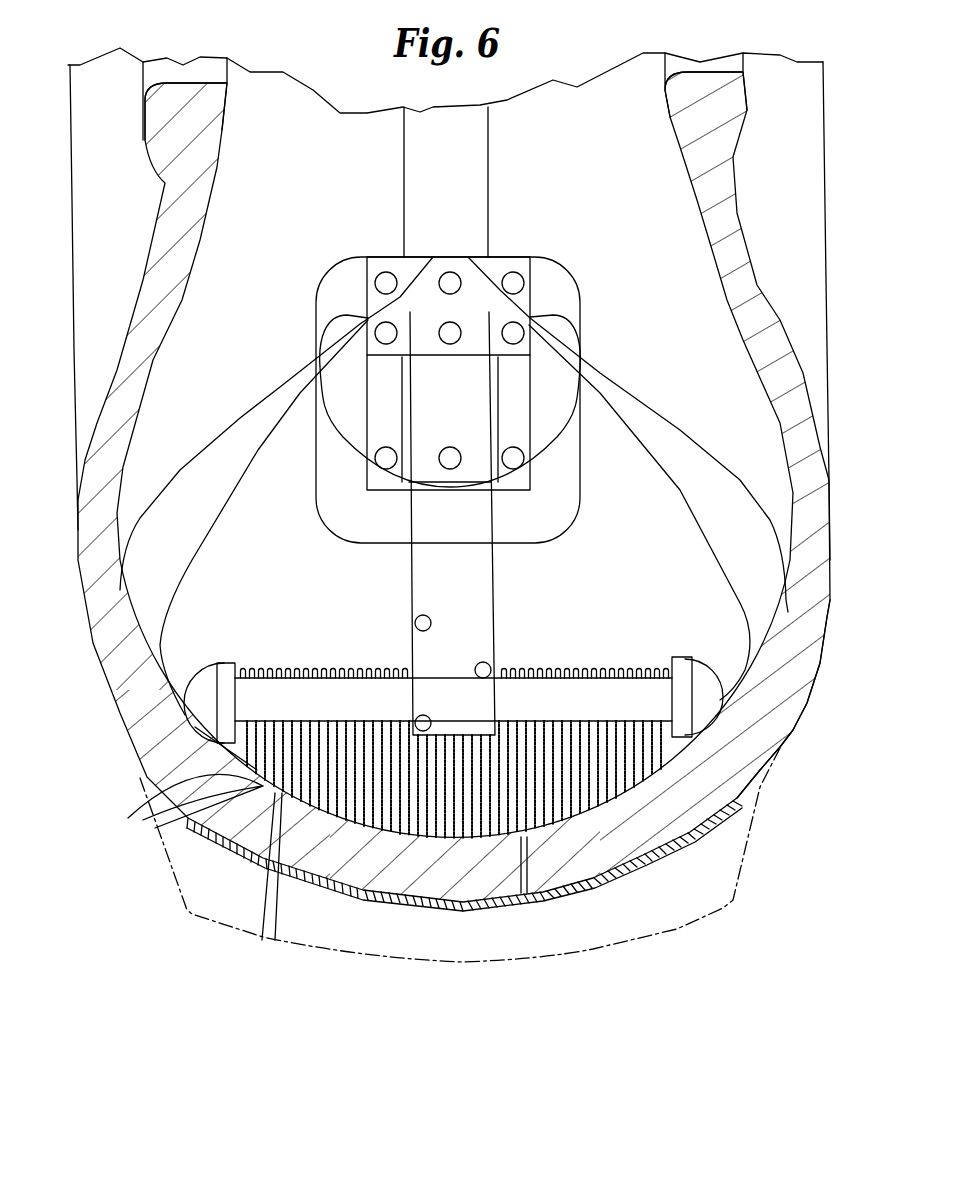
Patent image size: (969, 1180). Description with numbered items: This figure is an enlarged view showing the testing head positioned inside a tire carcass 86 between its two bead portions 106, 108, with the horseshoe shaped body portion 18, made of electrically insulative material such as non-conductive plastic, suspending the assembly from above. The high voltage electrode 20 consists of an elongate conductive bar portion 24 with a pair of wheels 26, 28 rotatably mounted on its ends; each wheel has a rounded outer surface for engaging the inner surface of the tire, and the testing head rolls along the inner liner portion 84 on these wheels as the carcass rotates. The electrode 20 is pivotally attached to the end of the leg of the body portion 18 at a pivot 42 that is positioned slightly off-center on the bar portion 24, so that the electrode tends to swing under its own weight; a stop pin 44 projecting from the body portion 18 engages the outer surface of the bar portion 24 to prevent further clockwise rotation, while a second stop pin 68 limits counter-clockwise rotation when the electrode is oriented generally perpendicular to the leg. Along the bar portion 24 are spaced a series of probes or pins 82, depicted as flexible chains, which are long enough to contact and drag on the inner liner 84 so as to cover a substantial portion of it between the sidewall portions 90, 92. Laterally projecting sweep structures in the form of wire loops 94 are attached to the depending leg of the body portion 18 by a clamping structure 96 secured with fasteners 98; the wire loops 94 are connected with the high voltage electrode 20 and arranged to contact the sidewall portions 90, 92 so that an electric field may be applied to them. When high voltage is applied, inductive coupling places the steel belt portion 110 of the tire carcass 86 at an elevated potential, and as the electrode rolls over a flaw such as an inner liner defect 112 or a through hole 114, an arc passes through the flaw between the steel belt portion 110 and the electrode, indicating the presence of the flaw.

The body portion 18 is at (432, 173).
The high voltage electrode 20 is at (258, 692).
The bar portion 24 is at (573, 667).
The wheel 26 is at (218, 673).
The wheel 28 is at (703, 677).
The pivot 42 is at (430, 722).
The stop pin 44 is at (430, 622).
The stop pin 68 is at (487, 664).
The probe or pin 82 is at (600, 665).
The inner liner portion 84 is at (726, 598).
The tire carcass 86 is at (750, 757).
The sidewall portion 90 is at (78, 620).
The sidewall portion 92 is at (823, 567).
The wire loop 94 is at (258, 403).
The clamping structure 96 is at (454, 272).
The fasteners 98 is at (392, 277).
The bead portion 106 is at (200, 85).
The bead portion 108 is at (697, 70).
The steel belt portion 110 is at (610, 880).
The inner liner defect 112 is at (517, 867).
The through hole 114 is at (273, 913).